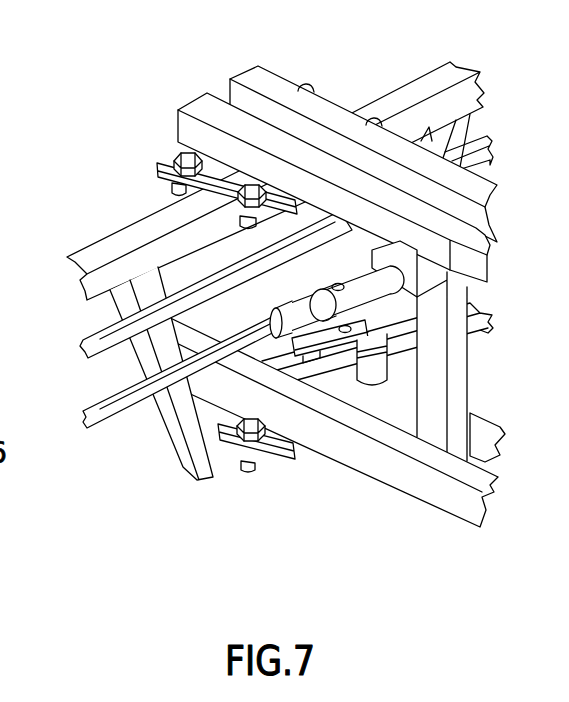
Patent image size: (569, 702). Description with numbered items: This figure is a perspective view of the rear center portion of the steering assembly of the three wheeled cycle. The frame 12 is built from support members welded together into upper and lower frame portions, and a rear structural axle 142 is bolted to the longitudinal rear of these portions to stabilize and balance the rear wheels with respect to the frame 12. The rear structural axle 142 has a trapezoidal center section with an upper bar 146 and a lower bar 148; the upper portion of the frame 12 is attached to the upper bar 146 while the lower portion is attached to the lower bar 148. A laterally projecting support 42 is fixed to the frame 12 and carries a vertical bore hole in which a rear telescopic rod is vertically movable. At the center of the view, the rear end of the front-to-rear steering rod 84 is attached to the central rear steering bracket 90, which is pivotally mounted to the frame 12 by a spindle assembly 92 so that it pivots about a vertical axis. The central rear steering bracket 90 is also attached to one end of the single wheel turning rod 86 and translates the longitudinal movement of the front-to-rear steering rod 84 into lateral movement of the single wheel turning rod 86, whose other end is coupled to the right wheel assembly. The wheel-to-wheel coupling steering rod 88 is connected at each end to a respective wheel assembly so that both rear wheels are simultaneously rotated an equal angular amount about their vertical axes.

The upper bar 146 is at (389, 105).
The rear structural axle 142 is at (127, 233).
The front-to-rear steering rod 84 is at (477, 313).
The laterally projecting support 42 is at (413, 323).
The wheel-to-wheel coupling steering rod 88 is at (110, 343).
The single wheel turning rod 86 is at (135, 408).
The lower bar 148 is at (235, 456).
The central rear steering bracket 90 is at (342, 355).
The spindle assembly 92 is at (362, 380).
The frame 12 is at (410, 483).